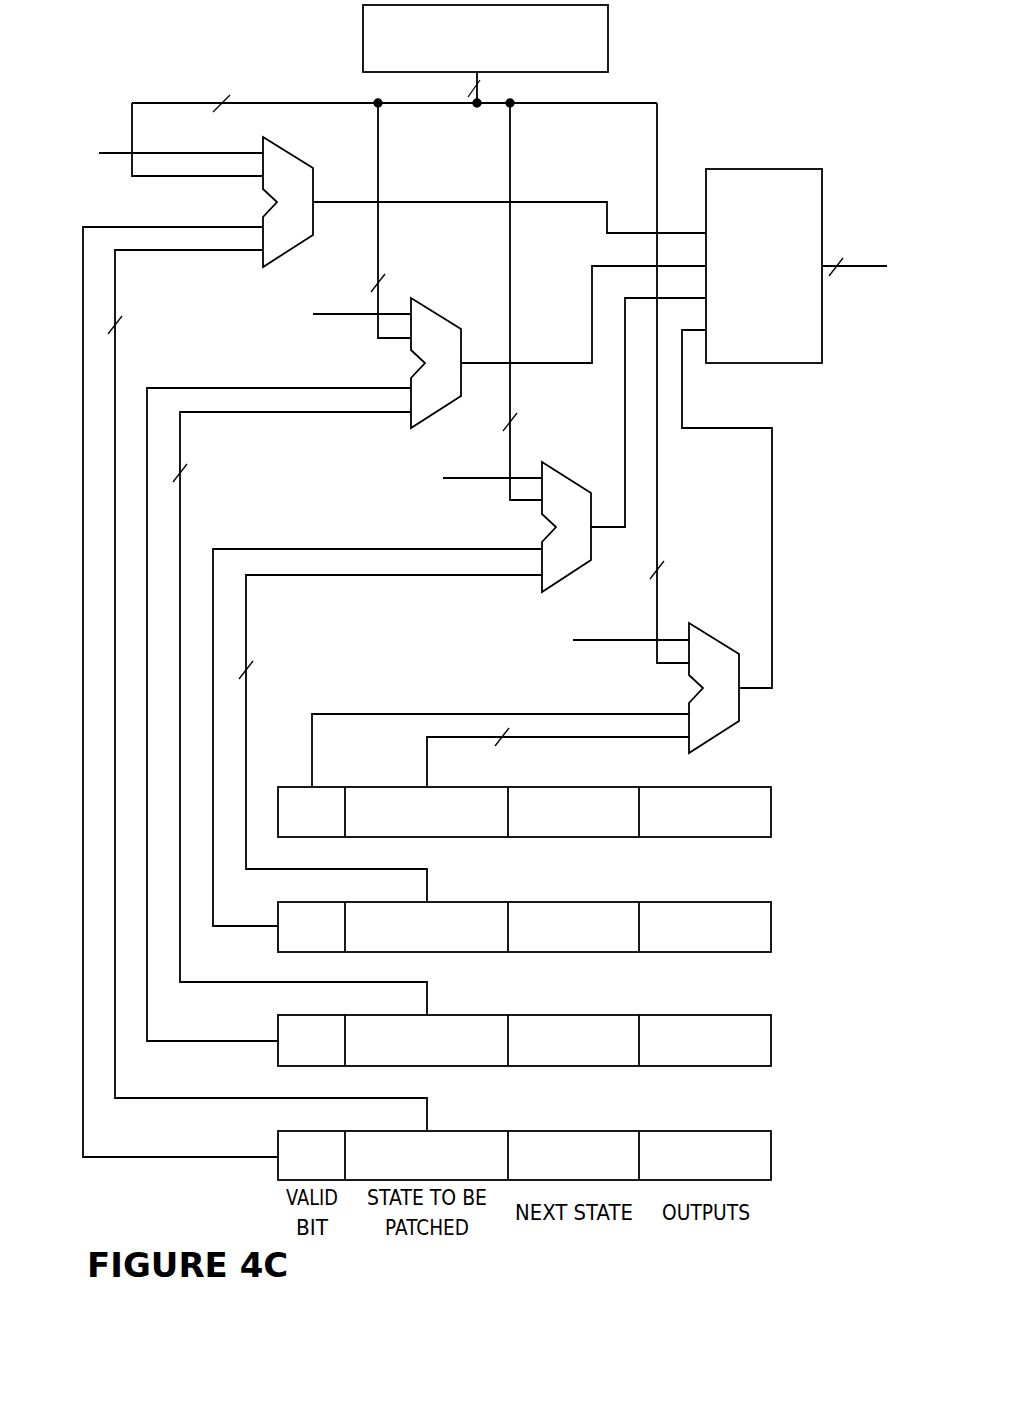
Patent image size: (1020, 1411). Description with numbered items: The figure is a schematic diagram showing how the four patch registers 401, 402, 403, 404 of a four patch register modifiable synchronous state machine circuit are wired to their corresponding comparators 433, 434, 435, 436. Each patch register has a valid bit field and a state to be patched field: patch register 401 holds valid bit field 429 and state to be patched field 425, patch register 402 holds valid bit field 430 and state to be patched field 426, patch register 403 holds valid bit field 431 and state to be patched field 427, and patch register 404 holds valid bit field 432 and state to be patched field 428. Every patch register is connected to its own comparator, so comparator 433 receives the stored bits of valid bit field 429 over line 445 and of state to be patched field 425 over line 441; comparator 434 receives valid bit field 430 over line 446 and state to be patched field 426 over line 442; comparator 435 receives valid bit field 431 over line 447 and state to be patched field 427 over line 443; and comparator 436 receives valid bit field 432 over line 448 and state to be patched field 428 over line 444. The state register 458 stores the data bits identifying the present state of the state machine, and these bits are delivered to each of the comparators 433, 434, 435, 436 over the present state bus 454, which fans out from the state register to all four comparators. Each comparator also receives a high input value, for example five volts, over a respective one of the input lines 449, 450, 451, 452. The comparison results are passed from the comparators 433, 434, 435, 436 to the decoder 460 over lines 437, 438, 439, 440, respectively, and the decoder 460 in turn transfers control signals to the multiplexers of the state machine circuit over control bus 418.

The patch register 401 is at (563, 812).
The patch register 402 is at (563, 927).
The patch register 403 is at (563, 1040).
The patch register 404 is at (563, 1155).
The control bus 418 is at (855, 250).
The state to be patched field 425 is at (409, 825).
The state to be patched field 426 is at (409, 940).
The state to be patched field 427 is at (409, 1054).
The state to be patched field 428 is at (409, 1169).
The valid bit field 429 is at (294, 825).
The valid bit field 430 is at (294, 940).
The valid bit field 431 is at (294, 1054).
The valid bit field 432 is at (294, 1169).
The comparator 433 is at (701, 676).
The comparator 434 is at (553, 515).
The comparator 435 is at (423, 351).
The comparator 436 is at (275, 190).
The line 437 is at (765, 509).
The line 438 is at (637, 412).
The line 439 is at (583, 345).
The line 440 is at (509, 189).
The line 441 is at (558, 757).
The line 442 is at (390, 738).
The line 443 is at (300, 713).
The line 444 is at (267, 690).
The line 445 is at (500, 720).
The line 446 is at (377, 707).
The line 447 is at (279, 687).
The line 448 is at (166, 661).
The input line 449 is at (620, 665).
The input line 450 is at (481, 502).
The input line 451 is at (350, 336).
The input line 452 is at (163, 132).
The present state bus 454 is at (432, 353).
The state register 458 is at (467, 68).
The decoder 460 is at (746, 294).